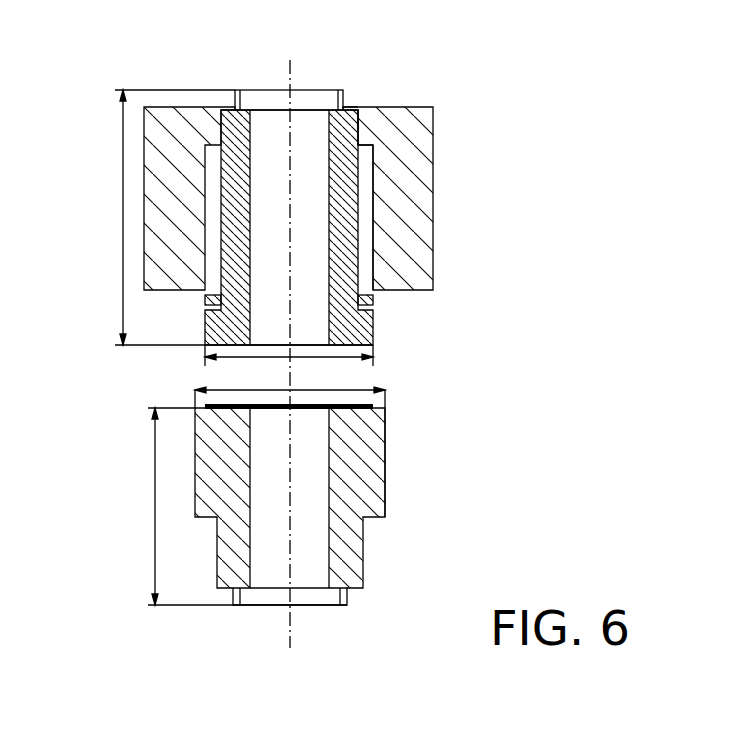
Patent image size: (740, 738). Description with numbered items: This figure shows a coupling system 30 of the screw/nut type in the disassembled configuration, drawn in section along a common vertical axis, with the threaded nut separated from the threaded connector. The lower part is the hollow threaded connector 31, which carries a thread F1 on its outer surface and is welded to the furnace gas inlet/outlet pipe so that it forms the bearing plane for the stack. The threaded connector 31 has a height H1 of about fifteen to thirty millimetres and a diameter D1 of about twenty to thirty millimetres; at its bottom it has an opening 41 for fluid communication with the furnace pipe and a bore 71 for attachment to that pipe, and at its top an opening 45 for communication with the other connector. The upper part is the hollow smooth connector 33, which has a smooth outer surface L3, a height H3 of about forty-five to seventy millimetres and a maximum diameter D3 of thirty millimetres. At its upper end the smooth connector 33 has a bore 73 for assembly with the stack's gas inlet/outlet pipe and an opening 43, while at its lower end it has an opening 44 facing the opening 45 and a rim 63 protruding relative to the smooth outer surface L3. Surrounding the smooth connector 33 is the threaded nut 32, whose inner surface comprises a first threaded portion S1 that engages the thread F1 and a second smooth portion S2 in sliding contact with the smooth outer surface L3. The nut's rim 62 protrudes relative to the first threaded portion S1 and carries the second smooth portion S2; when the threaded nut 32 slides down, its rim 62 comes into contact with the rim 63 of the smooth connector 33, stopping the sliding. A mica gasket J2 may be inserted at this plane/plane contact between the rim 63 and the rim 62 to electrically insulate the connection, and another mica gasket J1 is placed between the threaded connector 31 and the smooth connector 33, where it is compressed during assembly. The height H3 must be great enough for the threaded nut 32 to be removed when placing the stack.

The coupling system 30 is at (145, 366).
The threaded connector 31 is at (358, 451).
The threaded nut 32 is at (410, 180).
The smooth connector 33 is at (352, 107).
The opening 41 is at (316, 612).
The opening 43 is at (305, 76).
The opening 44 is at (172, 366).
The opening 45 is at (350, 380).
The rim 62 is at (359, 144).
The rim 63 is at (204, 335).
The bore 71 is at (353, 598).
The bore 73 is at (350, 100).
The diameter D1 is at (337, 388).
The maximum diameter D3 is at (272, 360).
The thread F1 is at (360, 482).
The height H1 is at (155, 502).
The height H3 is at (120, 213).
The mica gasket J1 is at (385, 424).
The mica gasket J2 is at (377, 302).
The smooth outer surface L3 is at (358, 202).
The first threaded portion S1 is at (372, 215).
The second smooth portion S2 is at (351, 104).